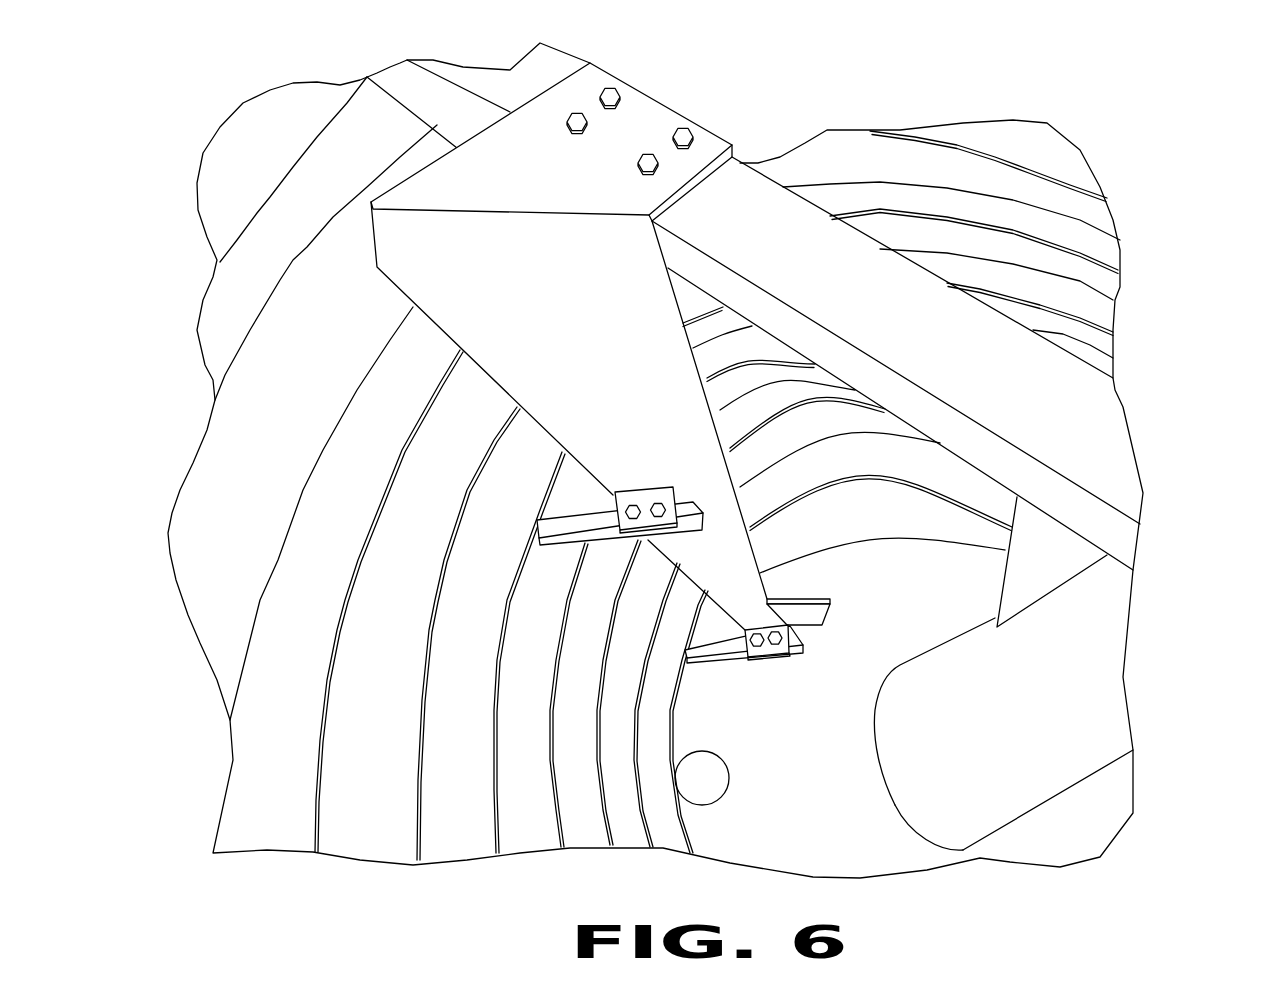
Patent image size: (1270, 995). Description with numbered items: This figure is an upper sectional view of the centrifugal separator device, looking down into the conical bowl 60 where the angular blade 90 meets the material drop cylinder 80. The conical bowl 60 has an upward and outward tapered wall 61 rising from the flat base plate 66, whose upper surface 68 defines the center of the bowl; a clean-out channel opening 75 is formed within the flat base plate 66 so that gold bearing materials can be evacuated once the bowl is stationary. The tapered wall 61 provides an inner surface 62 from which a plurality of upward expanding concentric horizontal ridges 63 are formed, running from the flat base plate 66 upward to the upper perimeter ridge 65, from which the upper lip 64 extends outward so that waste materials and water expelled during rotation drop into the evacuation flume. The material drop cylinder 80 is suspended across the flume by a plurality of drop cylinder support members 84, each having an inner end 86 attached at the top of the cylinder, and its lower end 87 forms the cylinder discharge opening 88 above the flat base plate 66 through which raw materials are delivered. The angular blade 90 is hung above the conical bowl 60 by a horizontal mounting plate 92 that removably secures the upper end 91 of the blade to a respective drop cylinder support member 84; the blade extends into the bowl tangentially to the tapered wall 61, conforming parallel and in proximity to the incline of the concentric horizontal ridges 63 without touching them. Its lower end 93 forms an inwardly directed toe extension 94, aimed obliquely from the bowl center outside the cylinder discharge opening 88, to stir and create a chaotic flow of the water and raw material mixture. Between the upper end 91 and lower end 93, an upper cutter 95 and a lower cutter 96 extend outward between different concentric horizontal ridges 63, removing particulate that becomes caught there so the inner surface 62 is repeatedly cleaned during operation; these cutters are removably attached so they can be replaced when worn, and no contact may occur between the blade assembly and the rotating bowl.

The conical bowl 60 is at (280, 467).
The outward tapered wall 61 is at (1050, 253).
The inner surface 62 is at (217, 610).
The concentric horizontal ridges 63 is at (257, 812).
The upper lip 64 is at (337, 147).
The upper perimeter ridge 65 is at (307, 247).
The flat base plate 66 is at (977, 570).
The upper surface 68 is at (836, 820).
The clean-out channel opening 75 is at (700, 777).
The material drop cylinder 80 is at (1093, 690).
The drop cylinder support members 84 is at (958, 145).
The inner end 86 is at (1097, 423).
The lower end 87 is at (993, 803).
The cylinder discharge opening 88 is at (920, 833).
The angular blade 90 is at (795, 152).
The upper end 91 is at (412, 263).
The mounting plate 92 is at (633, 98).
The lower end 93 is at (763, 580).
The toe extension 94 is at (831, 603).
The upper cutter 95 is at (563, 523).
The lower cutter 96 is at (640, 492).